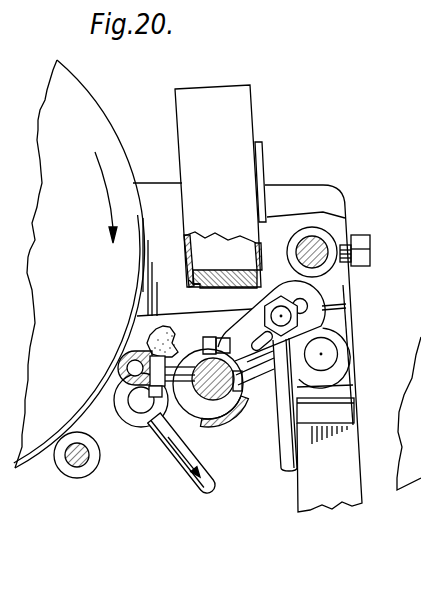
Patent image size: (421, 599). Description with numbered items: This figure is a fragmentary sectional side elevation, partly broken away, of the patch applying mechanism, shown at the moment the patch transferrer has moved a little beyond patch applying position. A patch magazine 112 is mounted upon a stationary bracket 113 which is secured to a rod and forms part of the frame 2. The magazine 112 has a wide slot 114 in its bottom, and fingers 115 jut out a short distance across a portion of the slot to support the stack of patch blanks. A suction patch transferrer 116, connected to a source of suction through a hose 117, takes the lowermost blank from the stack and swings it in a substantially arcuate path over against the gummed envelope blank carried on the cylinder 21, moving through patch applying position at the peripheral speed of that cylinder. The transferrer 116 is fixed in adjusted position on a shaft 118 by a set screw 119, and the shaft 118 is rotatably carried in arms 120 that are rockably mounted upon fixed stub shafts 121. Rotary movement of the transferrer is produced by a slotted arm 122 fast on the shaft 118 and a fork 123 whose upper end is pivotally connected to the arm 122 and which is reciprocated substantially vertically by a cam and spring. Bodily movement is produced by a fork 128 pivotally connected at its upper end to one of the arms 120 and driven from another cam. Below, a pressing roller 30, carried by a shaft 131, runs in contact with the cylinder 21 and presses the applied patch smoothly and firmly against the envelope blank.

The machine frame / body 2 is at (320, 197).
The cylinder 21 is at (97, 125).
The pressing roller 30 is at (62, 467).
The patch magazine 112 is at (240, 128).
The stationary bracket 113 is at (260, 180).
The slot 114 is at (214, 288).
The fingers 115 is at (192, 288).
The suction patch transferrer 116 is at (125, 372).
The hose 117 is at (150, 343).
The shaft 118 is at (218, 405).
The set screw 119 is at (205, 337).
The arms 120 is at (268, 384).
The fixed stub shafts 121 is at (330, 358).
The slotted arm 122 is at (313, 312).
The fork 123 is at (288, 433).
The fork 128 is at (177, 452).
The shaft 131 is at (89, 450).